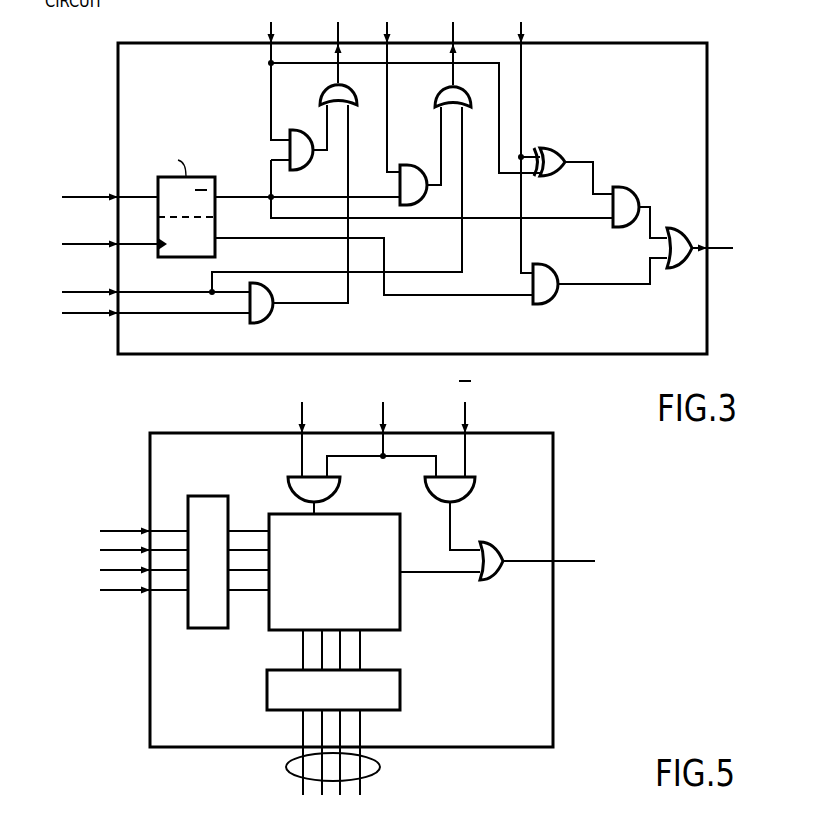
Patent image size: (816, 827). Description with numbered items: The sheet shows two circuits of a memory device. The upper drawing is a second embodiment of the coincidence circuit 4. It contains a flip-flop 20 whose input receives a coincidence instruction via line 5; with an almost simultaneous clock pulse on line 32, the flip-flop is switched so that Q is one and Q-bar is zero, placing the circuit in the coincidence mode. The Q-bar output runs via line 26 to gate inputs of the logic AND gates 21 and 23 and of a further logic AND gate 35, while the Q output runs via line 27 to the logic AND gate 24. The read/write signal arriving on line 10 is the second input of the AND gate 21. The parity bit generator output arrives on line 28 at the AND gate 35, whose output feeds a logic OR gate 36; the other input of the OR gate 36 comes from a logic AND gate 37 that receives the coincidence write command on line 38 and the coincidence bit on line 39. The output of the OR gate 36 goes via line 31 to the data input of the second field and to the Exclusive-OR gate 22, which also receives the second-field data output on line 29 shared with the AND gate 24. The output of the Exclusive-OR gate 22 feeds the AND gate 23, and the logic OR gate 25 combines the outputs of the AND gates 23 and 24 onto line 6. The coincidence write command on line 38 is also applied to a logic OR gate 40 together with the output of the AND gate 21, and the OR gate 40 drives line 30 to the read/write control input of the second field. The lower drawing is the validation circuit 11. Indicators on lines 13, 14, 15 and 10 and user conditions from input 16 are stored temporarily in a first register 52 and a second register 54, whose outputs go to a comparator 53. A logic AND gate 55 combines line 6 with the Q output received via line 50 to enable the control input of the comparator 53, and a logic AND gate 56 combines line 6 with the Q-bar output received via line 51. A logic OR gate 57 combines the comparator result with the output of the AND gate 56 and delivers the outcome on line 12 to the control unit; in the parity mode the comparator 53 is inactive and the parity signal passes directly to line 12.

In FIG. 3, the coincidence circuit 4 is at (707, 100).
In FIG. 3, the line 5 is at (103, 198).
In FIG. 3, the line 6 is at (716, 252).
In FIG. 5, the line 6 is at (385, 412).
In FIG. 3, the line 10 is at (387, 90).
In FIG. 5, the line 10 is at (132, 592).
In FIG. 5, the validation circuit 11 is at (556, 670).
In FIG. 5, the line 12 is at (577, 564).
In FIG. 5, the line 13 is at (127, 528).
In FIG. 5, the line 14 is at (109, 552).
In FIG. 5, the line 15 is at (110, 574).
In FIG. 5, the input 16 is at (380, 767).
In FIG. 3, the flip-flop 20 is at (199, 257).
In FIG. 3, the logic AND gate 21 is at (422, 198).
In FIG. 3, the Exclusive-OR gate 22 is at (558, 151).
In FIG. 3, the logic AND gate 23 is at (631, 192).
In FIG. 3, the logic AND gate 24 is at (550, 303).
In FIG. 3, the logic OR gate 25 is at (681, 228).
In FIG. 3, the line 26 is at (223, 200).
In FIG. 3, the line 27 is at (223, 241).
In FIG. 3, the line 28 is at (271, 90).
In FIG. 3, the line 29 is at (521, 90).
In FIG. 3, the line 30 is at (449, 83).
In FIG. 3, the line 31 is at (337, 31).
In FIG. 3, the line 32 is at (109, 246).
In FIG. 3, the logic AND gate 35 is at (303, 169).
In FIG. 3, the logic OR gate 36 is at (320, 90).
In FIG. 3, the logic AND gate 37 is at (267, 323).
In FIG. 3, the line 38 is at (86, 290).
In FIG. 3, the line 39 is at (103, 315).
In FIG. 3, the logic OR gate 40 is at (471, 101).
In FIG. 5, the line 50 is at (304, 412).
In FIG. 5, the line 51 is at (466, 412).
In FIG. 5, the first register 52 is at (211, 630).
In FIG. 5, the comparator 53 is at (402, 616).
In FIG. 5, the second register 54 is at (400, 690).
In FIG. 5, the logic AND gate 55 is at (340, 488).
In FIG. 5, the logic AND gate 56 is at (475, 488).
In FIG. 5, the logic OR gate 57 is at (496, 578).